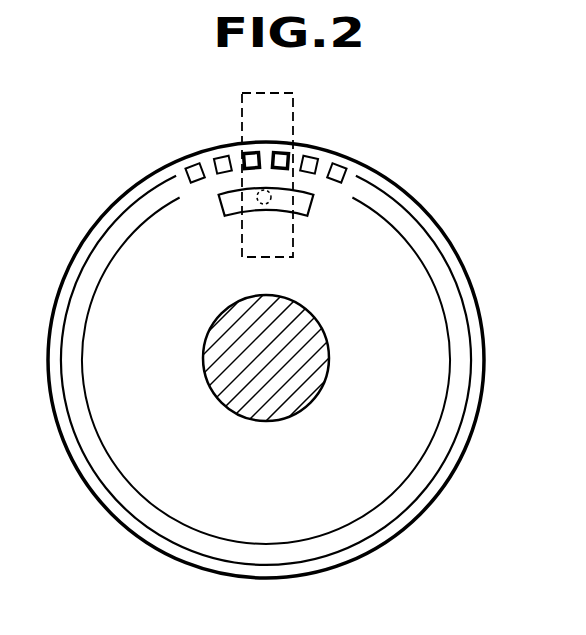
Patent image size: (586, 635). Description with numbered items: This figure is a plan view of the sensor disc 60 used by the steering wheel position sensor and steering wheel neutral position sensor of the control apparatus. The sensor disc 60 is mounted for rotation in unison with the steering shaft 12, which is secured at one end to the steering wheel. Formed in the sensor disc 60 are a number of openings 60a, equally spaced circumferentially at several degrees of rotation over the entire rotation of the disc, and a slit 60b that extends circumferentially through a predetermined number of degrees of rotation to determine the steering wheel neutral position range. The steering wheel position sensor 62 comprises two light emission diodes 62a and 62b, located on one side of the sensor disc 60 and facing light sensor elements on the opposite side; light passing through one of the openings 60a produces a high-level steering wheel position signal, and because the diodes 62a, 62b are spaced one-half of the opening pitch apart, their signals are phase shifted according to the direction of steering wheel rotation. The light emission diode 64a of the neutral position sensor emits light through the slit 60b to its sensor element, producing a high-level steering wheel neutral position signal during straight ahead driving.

The steering shaft 12 is at (327, 357).
The sensor disc 60 is at (443, 228).
The openings 60a is at (348, 168).
The slit 60b is at (225, 203).
The steering wheel position sensor 62 is at (405, 73).
The light emission diode 62a is at (250, 157).
The light emission diode 62b is at (282, 158).
The light emission diode 64a is at (274, 199).